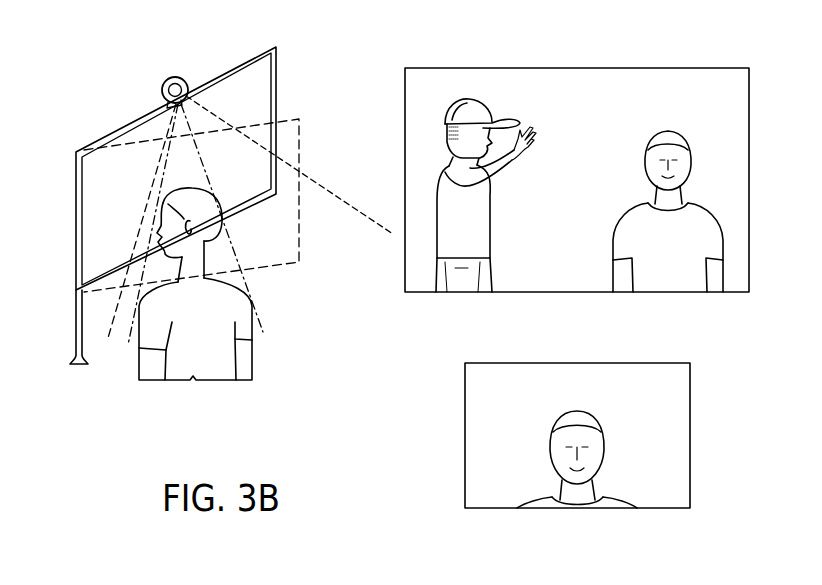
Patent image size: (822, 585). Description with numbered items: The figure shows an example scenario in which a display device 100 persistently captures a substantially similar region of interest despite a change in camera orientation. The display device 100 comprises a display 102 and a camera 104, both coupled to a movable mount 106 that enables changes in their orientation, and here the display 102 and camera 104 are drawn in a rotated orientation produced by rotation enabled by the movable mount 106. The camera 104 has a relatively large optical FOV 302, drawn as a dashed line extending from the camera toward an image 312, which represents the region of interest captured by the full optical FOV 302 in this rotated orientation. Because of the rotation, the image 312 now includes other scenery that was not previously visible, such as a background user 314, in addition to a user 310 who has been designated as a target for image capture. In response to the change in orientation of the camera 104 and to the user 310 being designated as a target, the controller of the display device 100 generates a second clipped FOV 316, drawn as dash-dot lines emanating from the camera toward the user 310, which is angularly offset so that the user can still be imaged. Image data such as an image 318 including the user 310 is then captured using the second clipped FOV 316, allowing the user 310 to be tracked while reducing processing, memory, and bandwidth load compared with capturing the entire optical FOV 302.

The display device 100 is at (133, 60).
The display 102 is at (75, 152).
The camera 104 is at (177, 77).
The movable mount 106 is at (72, 346).
The optical FOV 302 is at (324, 188).
The user 310 is at (253, 372).
The image 312 is at (750, 68).
The background user 314 is at (538, 142).
The second clipped FOV 316 is at (262, 325).
The image 318 is at (691, 363).